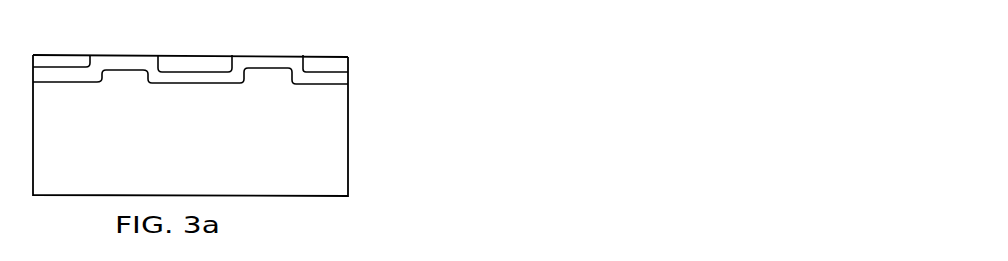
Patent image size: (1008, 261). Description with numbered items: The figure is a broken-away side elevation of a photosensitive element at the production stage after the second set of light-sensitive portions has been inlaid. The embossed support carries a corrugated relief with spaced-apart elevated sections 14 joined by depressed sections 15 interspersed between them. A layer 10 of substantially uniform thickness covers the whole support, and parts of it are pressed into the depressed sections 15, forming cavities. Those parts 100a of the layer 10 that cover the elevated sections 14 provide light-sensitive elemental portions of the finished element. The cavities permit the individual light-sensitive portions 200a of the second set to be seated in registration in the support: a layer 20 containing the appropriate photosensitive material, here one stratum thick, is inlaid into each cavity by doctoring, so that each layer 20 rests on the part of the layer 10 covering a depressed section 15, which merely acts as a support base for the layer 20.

The layer 10 is at (104, 52).
The elevated sections 14 is at (124, 70).
The depressed sections 15 is at (207, 83).
The layer 20 is at (350, 59).
The parts of layer 100a is at (119, 56).
The light-sensitive portions 200a is at (195, 57).